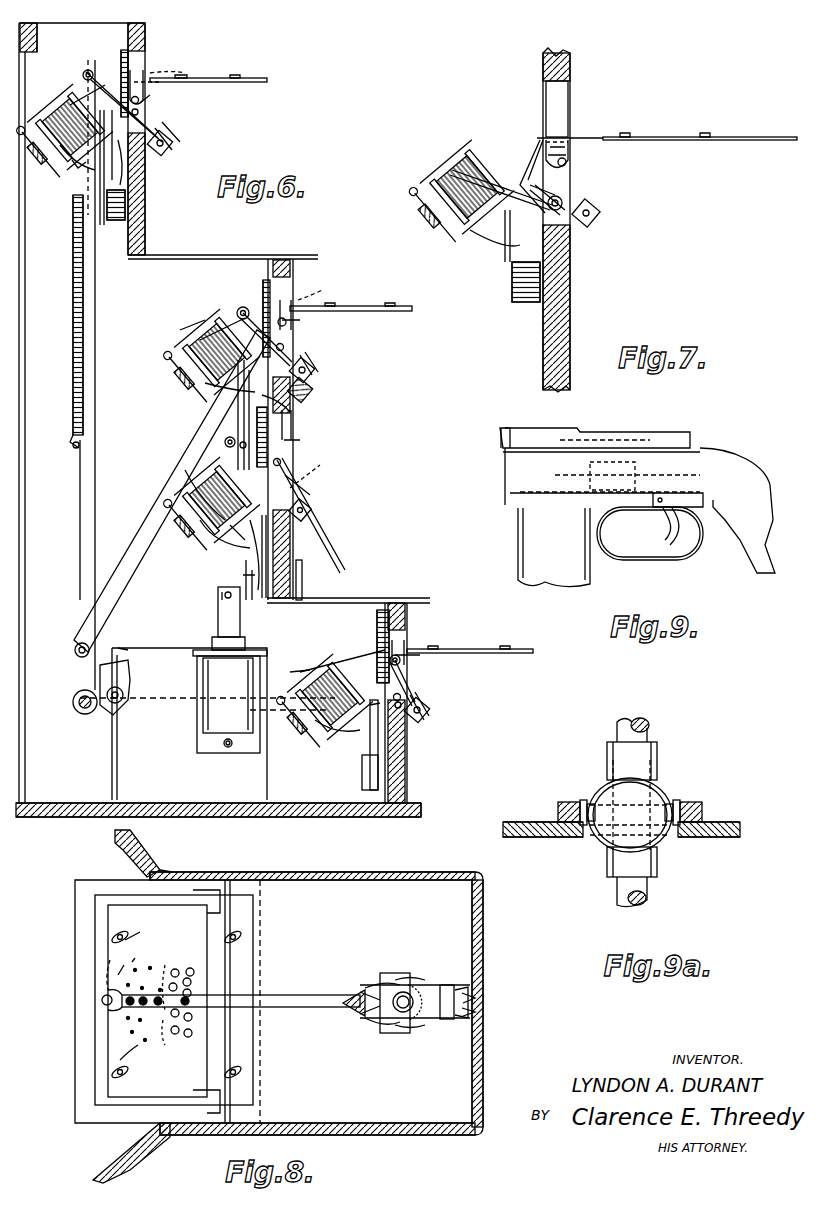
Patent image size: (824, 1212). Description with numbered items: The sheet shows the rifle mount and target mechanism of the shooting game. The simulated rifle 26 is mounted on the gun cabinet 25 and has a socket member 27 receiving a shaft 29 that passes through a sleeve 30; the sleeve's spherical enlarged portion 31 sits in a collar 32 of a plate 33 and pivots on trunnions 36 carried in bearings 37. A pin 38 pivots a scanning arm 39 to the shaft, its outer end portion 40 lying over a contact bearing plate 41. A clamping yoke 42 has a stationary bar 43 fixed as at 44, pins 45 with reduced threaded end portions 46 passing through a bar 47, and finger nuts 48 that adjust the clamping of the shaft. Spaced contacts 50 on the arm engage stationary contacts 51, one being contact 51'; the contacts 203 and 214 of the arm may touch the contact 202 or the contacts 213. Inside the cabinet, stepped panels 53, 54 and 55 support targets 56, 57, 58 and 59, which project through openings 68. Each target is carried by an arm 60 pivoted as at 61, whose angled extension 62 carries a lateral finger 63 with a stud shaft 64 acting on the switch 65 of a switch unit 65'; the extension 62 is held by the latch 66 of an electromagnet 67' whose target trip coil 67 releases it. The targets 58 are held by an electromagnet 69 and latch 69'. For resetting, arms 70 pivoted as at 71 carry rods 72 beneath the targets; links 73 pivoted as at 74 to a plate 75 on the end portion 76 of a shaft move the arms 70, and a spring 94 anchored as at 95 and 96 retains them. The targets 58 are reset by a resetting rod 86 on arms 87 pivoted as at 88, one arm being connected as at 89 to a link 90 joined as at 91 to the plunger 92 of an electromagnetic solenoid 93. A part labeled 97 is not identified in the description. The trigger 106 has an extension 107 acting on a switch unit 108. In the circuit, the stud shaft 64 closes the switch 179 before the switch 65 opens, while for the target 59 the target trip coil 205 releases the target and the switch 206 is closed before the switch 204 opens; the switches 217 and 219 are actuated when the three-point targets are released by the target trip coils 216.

In FIG. 8, the gun mounting cabinet 25 is at (485, 958).
In FIG. 9, the simulated rifle 26 is at (548, 462).
In FIG. 9, the socket member 27 is at (545, 533).
In FIG. 9A, the shaft 29 is at (650, 726).
In FIG. 9A, the sleeve 30 is at (658, 764).
In FIG. 9A, the spherical enlarged portion 31 is at (665, 845).
In FIG. 9A, the collar 32 is at (690, 803).
In FIG. 9A, the plate 33 is at (740, 825).
In FIG. 9A, the trunnions 36 is at (556, 815).
In FIG. 9A, the bearings 37 is at (580, 802).
In FIG. 8, the pin 38 is at (404, 1033).
In FIG. 8, the scanning arm 39 is at (298, 995).
In FIG. 8, the outer end portion 40 is at (115, 1012).
In FIG. 8, the contact bearing plate 41 is at (130, 1095).
In FIG. 8, the clamping yoke 42 is at (418, 975).
In FIG. 8, the stationary bar 43 is at (456, 990).
In FIG. 8, the fixing point 44 is at (475, 1005).
In FIG. 8, the pins 45 is at (364, 988).
In FIG. 8, the reduced threaded end portions 46 is at (395, 1028).
In FIG. 8, the bar 47 is at (445, 1022).
In FIG. 8, the finger nuts 48 is at (365, 1020).
In FIG. 8, the spaced contacts 50 is at (125, 996).
In FIG. 8, the stationary contacts 51 is at (94, 1062).
In FIG. 8, the contact 51' is at (128, 953).
In FIG. 6, the panel 53 is at (142, 214).
In FIG. 6, the panel 54 is at (296, 590).
In FIG. 6, the panel 55 is at (406, 796).
In FIG. 6, the target 56 is at (262, 80).
In FIG. 7, the target 56 is at (735, 137).
In FIG. 6, the target 57 is at (372, 306).
In FIG. 6, the target 58 is at (332, 535).
In FIG. 6, the target 59 is at (490, 650).
In FIG. 6, the arm 60 is at (150, 82).
In FIG. 7, the arm 60 is at (605, 144).
In FIG. 6, the pivot 61 is at (147, 85).
In FIG. 7, the pivot 61 is at (568, 150).
In FIG. 6, the angled extension 62 is at (108, 80).
In FIG. 7, the angled extension 62 is at (522, 155).
In FIG. 6, the lateral finger 63 is at (140, 102).
In FIG. 7, the lateral finger 63 is at (566, 166).
In FIG. 6, the stud shaft 64 is at (150, 115).
In FIG. 7, the stud shaft 64 is at (562, 200).
In FIG. 6, the switch 65 is at (175, 290).
In FIG. 6, the switch unit 65' is at (278, 465).
In FIG. 6, the latch 66 is at (88, 98).
In FIG. 7, the latch 66 is at (515, 180).
In FIG. 6, the target trip coil 67 is at (141, 346).
In FIG. 7, the target trip coil 67 is at (493, 247).
In FIG. 6, the electromagnet 67' is at (194, 416).
In FIG. 7, the electromagnet 67' is at (462, 197).
In FIG. 6, the openings 68 is at (140, 65).
In FIG. 7, the openings 68 is at (558, 100).
In FIG. 6, the electromagnet 69 is at (192, 499).
In FIG. 6, the latch 69' is at (220, 539).
In FIG. 6, the arms 70 is at (128, 48).
In FIG. 7, the arms 70 is at (570, 200).
In FIG. 6, the pivot 71 is at (245, 180).
In FIG. 6, the rods 72 is at (172, 142).
In FIG. 7, the rods 72 is at (596, 217).
In FIG. 6, the links 73 is at (170, 428).
In FIG. 6, the pivot 74 is at (72, 704).
In FIG. 6, the plate 75 is at (105, 668).
In FIG. 6, the end portion 76 is at (122, 690).
In FIG. 6, the resetting rod 86 is at (308, 508).
In FIG. 6, the arms 87 is at (300, 488).
In FIG. 6, the pivot 88 is at (305, 470).
In FIG. 6, the pivot connection 89 is at (232, 440).
In FIG. 6, the link 90 is at (240, 572).
In FIG. 6, the pivot 91 is at (224, 598).
In FIG. 6, the plunger 92 is at (240, 620).
In FIG. 6, the electromagnetic solenoid 93 is at (218, 688).
In FIG. 6, the spring 94 is at (72, 300).
In FIG. 6, the connection point 95 is at (70, 440).
In FIG. 6, the connection point 96 is at (75, 166).
In FIG. 6, the wall 97 is at (270, 262).
In FIG. 9, the trigger 106 is at (662, 538).
In FIG. 9, the extension 107 is at (735, 475).
In FIG. 9, the switch unit 108 is at (648, 480).
In FIG. 6, the switch 179 is at (105, 200).
In FIG. 7, the switch 179 is at (510, 260).
In FIG. 8, the contact 202 is at (165, 965).
In FIG. 8, the contact 203 is at (175, 1000).
In FIG. 6, the switch 204 is at (406, 720).
In FIG. 6, the target trip coil 205 is at (296, 676).
In FIG. 6, the switch 206 is at (345, 732).
In FIG. 8, the contacts 213 is at (168, 1048).
In FIG. 8, the contacts 214 is at (190, 1003).
In FIG. 6, the target trip coils 216 is at (190, 340).
In FIG. 6, the switch 217 is at (303, 388).
In FIG. 6, the switch 219 is at (210, 384).